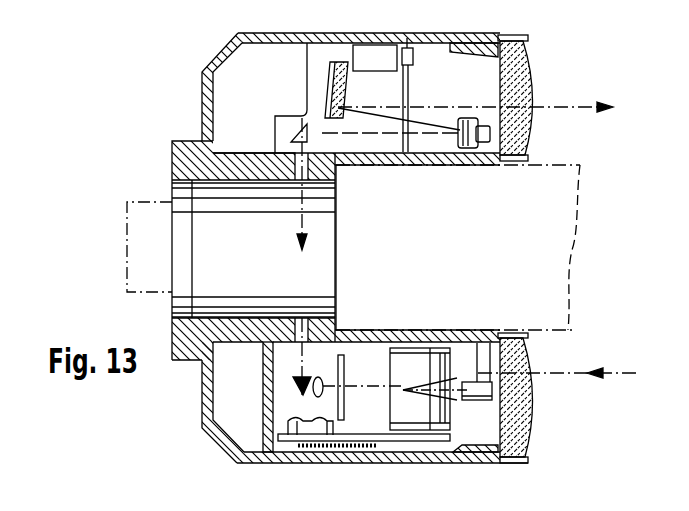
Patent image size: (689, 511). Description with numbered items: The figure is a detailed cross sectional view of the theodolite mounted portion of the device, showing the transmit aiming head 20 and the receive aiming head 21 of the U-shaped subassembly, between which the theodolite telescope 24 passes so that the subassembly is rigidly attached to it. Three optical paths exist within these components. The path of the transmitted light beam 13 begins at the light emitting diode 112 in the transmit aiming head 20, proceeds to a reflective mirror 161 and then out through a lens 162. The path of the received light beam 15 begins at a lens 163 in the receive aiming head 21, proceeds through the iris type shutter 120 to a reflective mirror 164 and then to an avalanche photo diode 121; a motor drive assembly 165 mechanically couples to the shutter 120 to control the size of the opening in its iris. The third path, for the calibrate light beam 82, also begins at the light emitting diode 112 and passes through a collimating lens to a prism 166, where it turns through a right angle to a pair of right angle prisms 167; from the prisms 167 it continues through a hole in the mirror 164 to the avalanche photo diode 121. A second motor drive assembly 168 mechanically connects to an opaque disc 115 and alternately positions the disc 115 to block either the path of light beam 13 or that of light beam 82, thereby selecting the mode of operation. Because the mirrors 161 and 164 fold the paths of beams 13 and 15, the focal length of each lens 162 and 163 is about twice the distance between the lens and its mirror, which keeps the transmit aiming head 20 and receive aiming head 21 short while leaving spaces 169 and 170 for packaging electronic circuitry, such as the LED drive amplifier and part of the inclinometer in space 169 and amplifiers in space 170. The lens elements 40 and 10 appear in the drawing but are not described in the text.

The transmit aiming head 20 is at (500, 33).
The receive aiming head 21 is at (263, 465).
The theodolite telescope 24 is at (565, 165).
The transmitted light beam 13 is at (475, 120).
The received light beam 15 is at (572, 371).
The calibrate light beam 82 is at (307, 221).
The space 169 is at (221, 81).
The space 170 is at (220, 406).
The second motor drive assembly 168 is at (353, 45).
The prism 166 is at (297, 133).
The right angle prisms 167 is at (292, 380).
The reflective mirror 161 is at (338, 117).
The lens 162 is at (533, 72).
The lens 163 is at (533, 393).
The reflective mirror 164 is at (352, 347).
The motor drive assembly 165 is at (303, 436).
The opaque disc 115 is at (410, 150).
The light emitting diode 112 is at (470, 150).
The iris type shutter 120 is at (417, 357).
The avalanche photo diode 121 is at (477, 392).
The lens 40 is at (305, 134).
The lens 10 is at (310, 388).